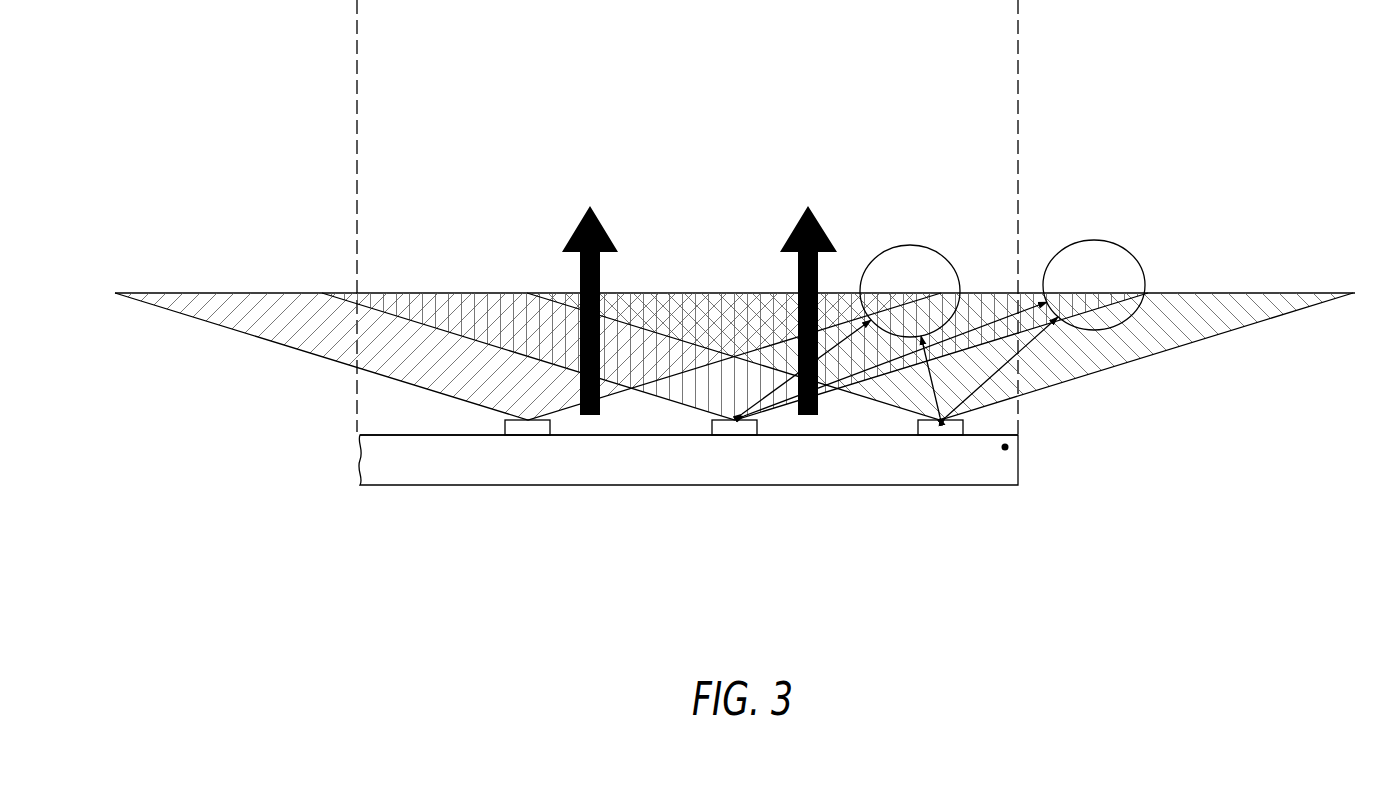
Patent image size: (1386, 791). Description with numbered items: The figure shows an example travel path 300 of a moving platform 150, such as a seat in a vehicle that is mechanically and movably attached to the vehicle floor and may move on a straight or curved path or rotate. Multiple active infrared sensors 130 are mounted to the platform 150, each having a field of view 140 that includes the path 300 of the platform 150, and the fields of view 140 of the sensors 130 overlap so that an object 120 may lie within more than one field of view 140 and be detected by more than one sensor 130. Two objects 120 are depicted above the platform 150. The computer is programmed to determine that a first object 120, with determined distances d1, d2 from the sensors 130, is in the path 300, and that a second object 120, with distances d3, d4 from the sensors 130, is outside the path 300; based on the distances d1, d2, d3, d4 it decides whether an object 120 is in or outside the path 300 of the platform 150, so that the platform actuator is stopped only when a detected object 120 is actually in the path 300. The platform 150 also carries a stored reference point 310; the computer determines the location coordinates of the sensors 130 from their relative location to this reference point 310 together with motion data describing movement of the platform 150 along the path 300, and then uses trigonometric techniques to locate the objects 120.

The travel path 300 is at (708, 38).
The object 120 is at (910, 245).
The infrared sensor 130 is at (525, 438).
The field of view 140 is at (292, 318).
The platform 150 is at (689, 455).
The platform reference point 310 is at (1010, 450).
The distance d1 is at (767, 394).
The distance d2 is at (925, 398).
The distance d3 is at (774, 406).
The distance d4 is at (1037, 330).